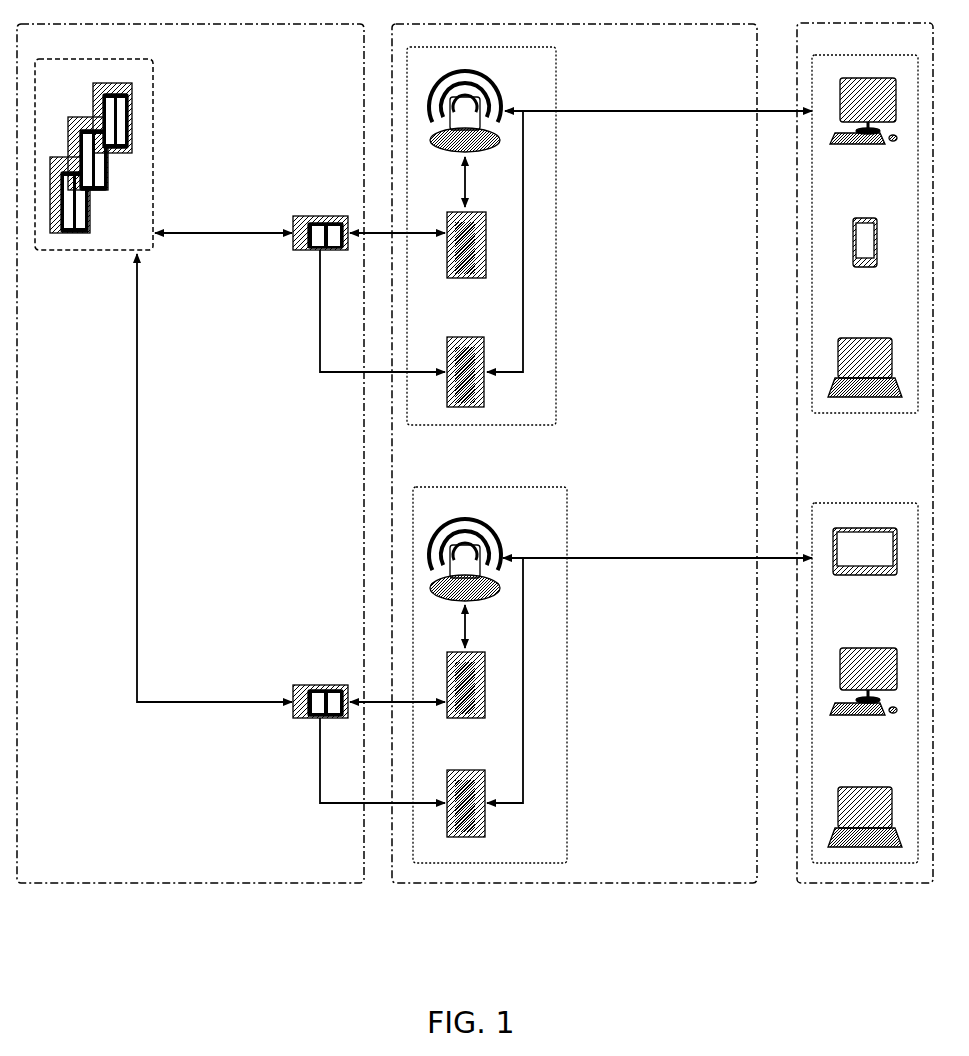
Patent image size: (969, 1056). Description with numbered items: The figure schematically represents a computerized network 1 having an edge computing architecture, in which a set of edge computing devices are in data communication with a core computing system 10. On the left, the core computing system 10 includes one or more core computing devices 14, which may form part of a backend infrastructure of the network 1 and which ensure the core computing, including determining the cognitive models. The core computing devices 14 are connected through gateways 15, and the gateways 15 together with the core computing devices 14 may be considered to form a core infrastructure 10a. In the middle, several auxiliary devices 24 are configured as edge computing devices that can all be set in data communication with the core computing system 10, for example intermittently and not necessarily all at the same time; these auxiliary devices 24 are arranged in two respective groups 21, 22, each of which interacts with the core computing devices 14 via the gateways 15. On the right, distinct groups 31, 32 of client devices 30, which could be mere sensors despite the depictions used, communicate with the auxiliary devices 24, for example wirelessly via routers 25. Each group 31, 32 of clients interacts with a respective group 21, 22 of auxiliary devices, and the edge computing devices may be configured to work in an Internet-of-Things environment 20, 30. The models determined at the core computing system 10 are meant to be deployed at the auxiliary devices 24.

The network 1 is at (713, 948).
The core computing system 10 is at (153, 138).
The core infrastructure 10a is at (18, 392).
The core computing devices 14 is at (137, 93).
The gateways 15 is at (297, 214).
The Internet-of-Things environment 20 is at (390, 563).
The group of auxiliary devices 21 is at (567, 840).
The group of auxiliary devices 22 is at (453, 427).
The auxiliary devices 24 is at (470, 280).
The routers 25 is at (447, 157).
The client devices 30 is at (873, 883).
The group of client devices 31 is at (810, 682).
The group of client devices 32 is at (810, 335).